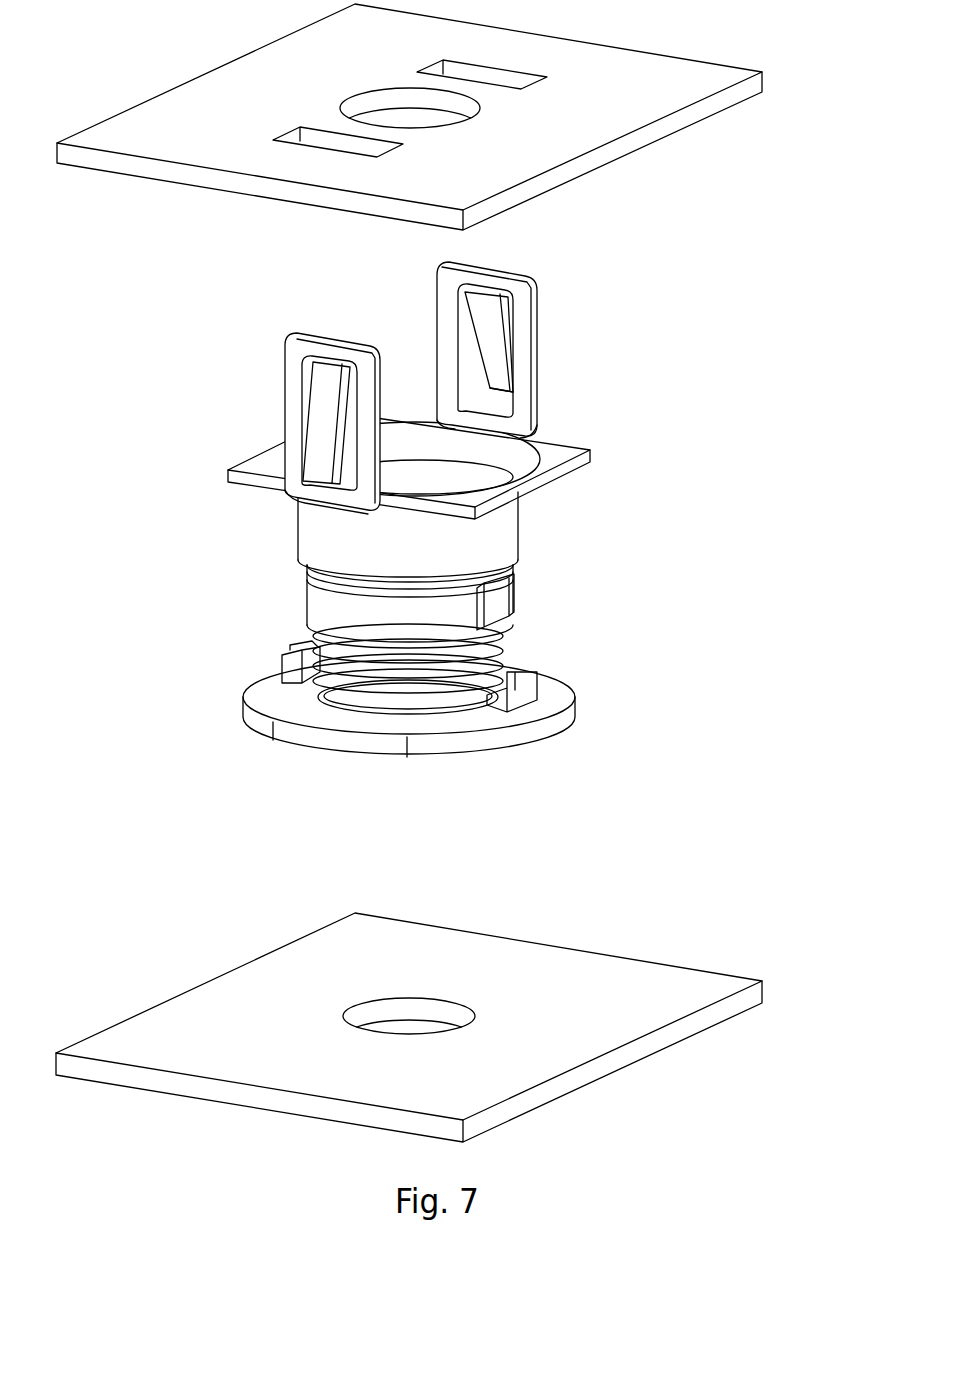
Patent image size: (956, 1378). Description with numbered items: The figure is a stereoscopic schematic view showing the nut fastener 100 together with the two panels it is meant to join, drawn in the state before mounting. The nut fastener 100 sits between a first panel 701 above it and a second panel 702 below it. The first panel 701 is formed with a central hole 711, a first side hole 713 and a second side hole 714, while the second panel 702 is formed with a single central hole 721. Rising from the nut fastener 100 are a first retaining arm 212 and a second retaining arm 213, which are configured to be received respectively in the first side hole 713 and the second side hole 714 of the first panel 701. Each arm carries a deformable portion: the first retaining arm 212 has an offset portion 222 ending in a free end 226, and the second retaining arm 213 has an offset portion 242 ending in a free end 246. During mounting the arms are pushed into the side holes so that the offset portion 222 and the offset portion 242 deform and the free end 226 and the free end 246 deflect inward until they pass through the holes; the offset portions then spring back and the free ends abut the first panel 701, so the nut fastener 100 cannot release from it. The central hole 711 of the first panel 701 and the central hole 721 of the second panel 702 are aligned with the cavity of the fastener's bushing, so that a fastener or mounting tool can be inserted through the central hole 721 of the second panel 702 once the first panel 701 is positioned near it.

The first panel 701 is at (750, 70).
The central hole 711 is at (477, 115).
The first side hole 713 is at (547, 77).
The second side hole 714 is at (403, 144).
The nut fastener 100 is at (518, 547).
The first retaining arm 212 is at (540, 335).
The second retaining arm 213 is at (261, 415).
The offset portion 222 is at (497, 357).
The free end 226 is at (500, 391).
The offset portion 242 is at (317, 440).
The free end 246 is at (282, 472).
The second panel 702 is at (733, 982).
The central hole 721 is at (465, 1018).